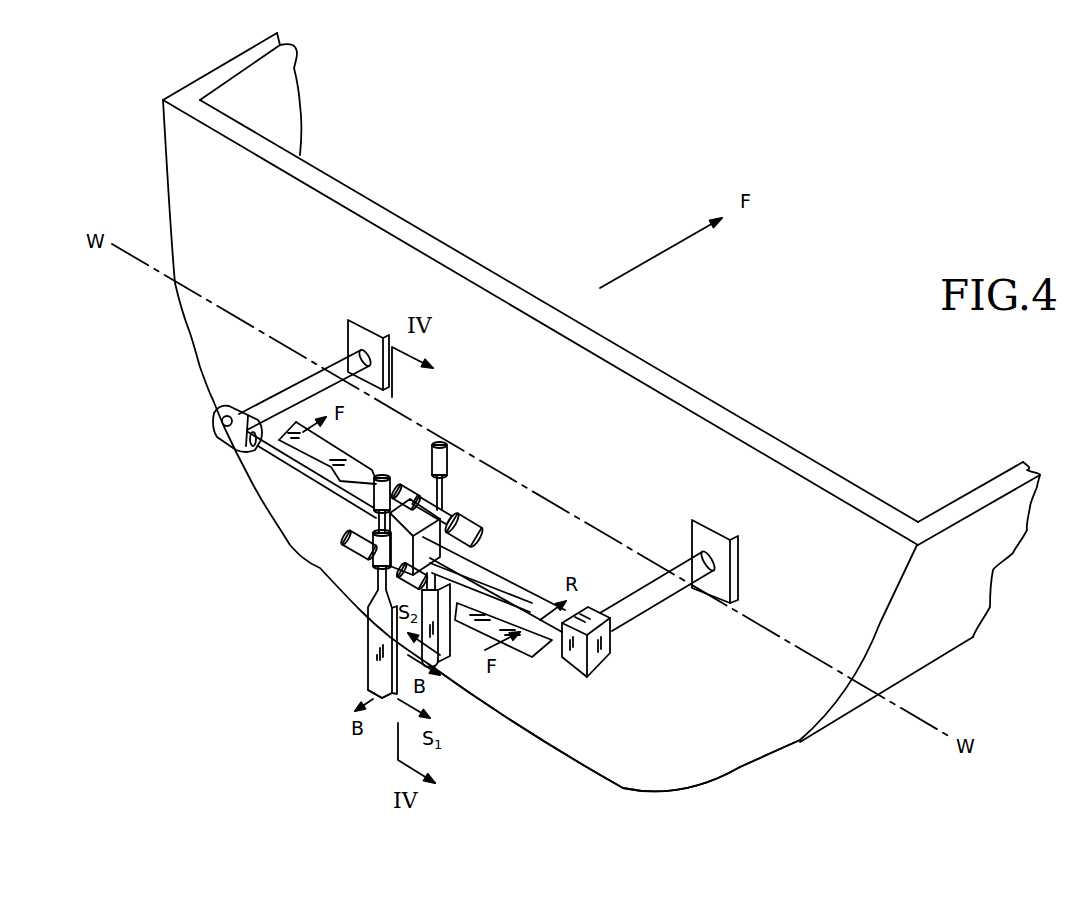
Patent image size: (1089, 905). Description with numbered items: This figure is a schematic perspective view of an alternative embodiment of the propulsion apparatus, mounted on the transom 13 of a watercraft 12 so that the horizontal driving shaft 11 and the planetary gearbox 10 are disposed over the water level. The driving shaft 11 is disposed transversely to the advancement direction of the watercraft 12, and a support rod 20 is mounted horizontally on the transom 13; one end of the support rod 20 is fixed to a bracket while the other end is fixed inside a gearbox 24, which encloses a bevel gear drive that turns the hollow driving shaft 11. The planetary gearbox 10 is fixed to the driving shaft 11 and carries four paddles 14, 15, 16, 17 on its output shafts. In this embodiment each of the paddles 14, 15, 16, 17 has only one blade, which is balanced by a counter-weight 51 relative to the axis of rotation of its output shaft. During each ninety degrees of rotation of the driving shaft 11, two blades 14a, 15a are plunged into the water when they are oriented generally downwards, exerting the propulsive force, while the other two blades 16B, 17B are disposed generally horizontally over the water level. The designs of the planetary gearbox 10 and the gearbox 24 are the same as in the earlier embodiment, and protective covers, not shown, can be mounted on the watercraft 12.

The planetary gearbox 10 is at (394, 506).
The horizontal driving shaft 11 is at (540, 592).
The watercraft 12 is at (925, 637).
The transom 13 is at (785, 697).
The paddle 14 is at (374, 572).
The blade 14a is at (369, 662).
The paddle 15 is at (448, 473).
The blade 15a is at (442, 665).
The paddle 16 is at (470, 565).
The blade 16B is at (543, 642).
The paddle 17 is at (458, 516).
The blade 17B is at (340, 458).
The support rod 20 is at (271, 461).
The gearbox 24 is at (605, 658).
The counter-weight 51 is at (450, 447).